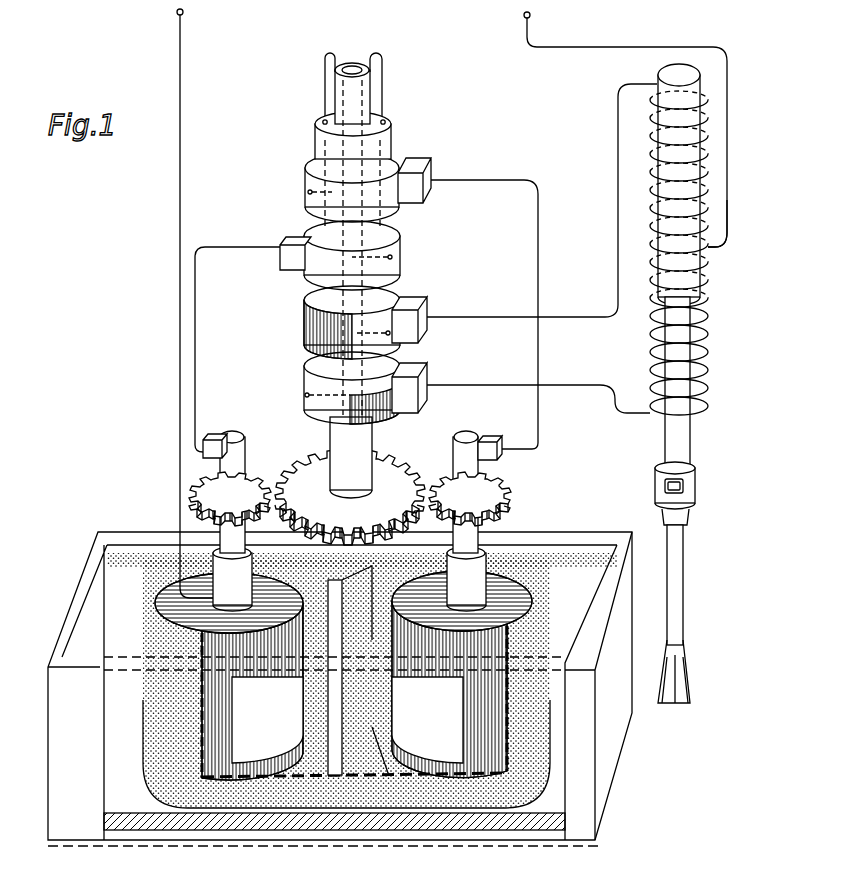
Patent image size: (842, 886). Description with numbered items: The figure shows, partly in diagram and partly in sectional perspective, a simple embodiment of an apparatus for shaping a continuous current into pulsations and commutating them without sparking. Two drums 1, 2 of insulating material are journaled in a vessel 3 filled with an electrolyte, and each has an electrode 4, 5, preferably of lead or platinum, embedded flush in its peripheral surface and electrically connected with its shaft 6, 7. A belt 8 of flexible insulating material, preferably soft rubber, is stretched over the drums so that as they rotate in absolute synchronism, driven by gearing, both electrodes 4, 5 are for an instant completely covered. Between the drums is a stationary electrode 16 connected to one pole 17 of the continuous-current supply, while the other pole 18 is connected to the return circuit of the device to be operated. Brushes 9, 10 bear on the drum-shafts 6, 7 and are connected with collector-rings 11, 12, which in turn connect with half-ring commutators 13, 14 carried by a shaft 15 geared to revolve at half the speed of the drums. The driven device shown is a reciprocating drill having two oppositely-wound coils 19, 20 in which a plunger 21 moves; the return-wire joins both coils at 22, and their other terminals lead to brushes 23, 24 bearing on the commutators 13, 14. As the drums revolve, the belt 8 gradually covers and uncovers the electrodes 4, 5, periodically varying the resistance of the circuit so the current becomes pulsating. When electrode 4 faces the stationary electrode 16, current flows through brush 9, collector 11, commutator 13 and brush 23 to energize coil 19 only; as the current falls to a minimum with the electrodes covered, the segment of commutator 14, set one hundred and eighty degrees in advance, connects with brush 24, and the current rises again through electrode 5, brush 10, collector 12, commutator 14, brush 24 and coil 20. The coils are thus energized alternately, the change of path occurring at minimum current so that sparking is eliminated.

The drum 1 is at (229, 676).
The drum 2 is at (462, 674).
The vessel 3 is at (623, 750).
The electrode 4 is at (267, 720).
The electrode 5 is at (427, 720).
The shaft 6 is at (244, 462).
The shaft 7 is at (481, 469).
The belt 8 is at (158, 590).
The brush 9 is at (214, 438).
The brush 10 is at (488, 443).
The collector-ring 11 is at (314, 264).
The collector-ring 12 is at (387, 194).
The half-ring commutator 13 is at (397, 300).
The half-ring commutator 14 is at (304, 380).
The shaft 15 is at (366, 443).
The stationary electrode 16 is at (348, 772).
The pole 17 is at (183, 14).
The pole 18 is at (530, 16).
The coil 19 is at (658, 140).
The coil 20 is at (663, 361).
The plunger 21 is at (656, 254).
The return-wire connection 22 is at (716, 251).
The brush 23 is at (418, 297).
The brush 24 is at (418, 366).